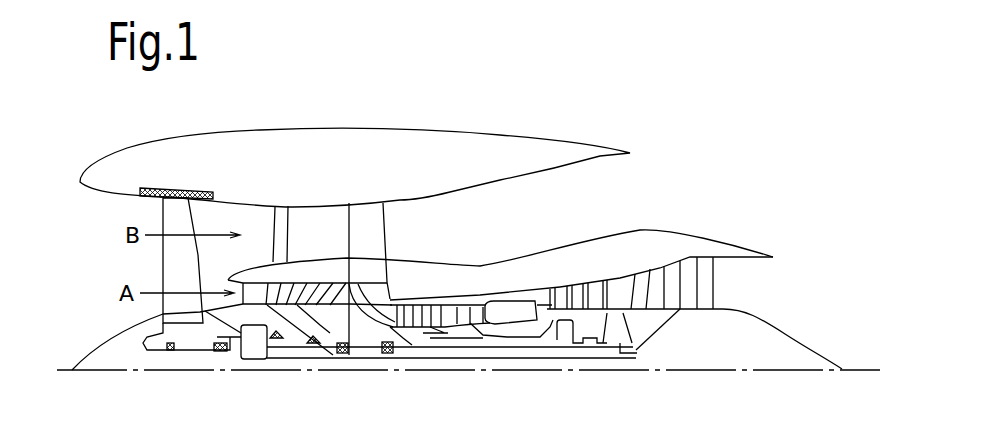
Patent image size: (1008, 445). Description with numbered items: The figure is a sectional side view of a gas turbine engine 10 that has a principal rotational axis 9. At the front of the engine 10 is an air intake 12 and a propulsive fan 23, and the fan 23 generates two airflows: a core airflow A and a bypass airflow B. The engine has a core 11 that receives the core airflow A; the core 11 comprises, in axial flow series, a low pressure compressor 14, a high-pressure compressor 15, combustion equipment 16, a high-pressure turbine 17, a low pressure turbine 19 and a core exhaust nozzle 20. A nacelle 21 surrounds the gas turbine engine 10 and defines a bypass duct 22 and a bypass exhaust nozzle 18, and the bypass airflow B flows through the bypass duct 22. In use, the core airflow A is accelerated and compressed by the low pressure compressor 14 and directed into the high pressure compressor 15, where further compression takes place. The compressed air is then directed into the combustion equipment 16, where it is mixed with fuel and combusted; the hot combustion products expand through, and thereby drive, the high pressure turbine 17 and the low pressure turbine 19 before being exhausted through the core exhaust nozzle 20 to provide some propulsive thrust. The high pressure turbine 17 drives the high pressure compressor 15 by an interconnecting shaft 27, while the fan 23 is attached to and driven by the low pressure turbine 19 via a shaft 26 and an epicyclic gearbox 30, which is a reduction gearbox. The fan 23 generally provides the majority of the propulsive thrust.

The principal rotational axis 9 is at (683, 372).
The gas turbine engine 10 is at (147, 148).
The core 11 is at (500, 274).
The air intake 12 is at (85, 230).
The low pressure compressor 14 is at (317, 283).
The high-pressure compressor 15 is at (440, 313).
The combustion equipment 16 is at (520, 317).
The high-pressure turbine 17 is at (563, 298).
The bypass exhaust nozzle 18 is at (694, 194).
The low pressure turbine 19 is at (690, 270).
The core exhaust nozzle 20 is at (750, 292).
The nacelle 21 is at (376, 147).
The bypass duct 22 is at (608, 200).
The propulsive fan 23 is at (165, 263).
The shaft 26 is at (443, 358).
The interconnecting shaft 27 is at (472, 350).
The epicyclic gearbox 30 is at (251, 362).